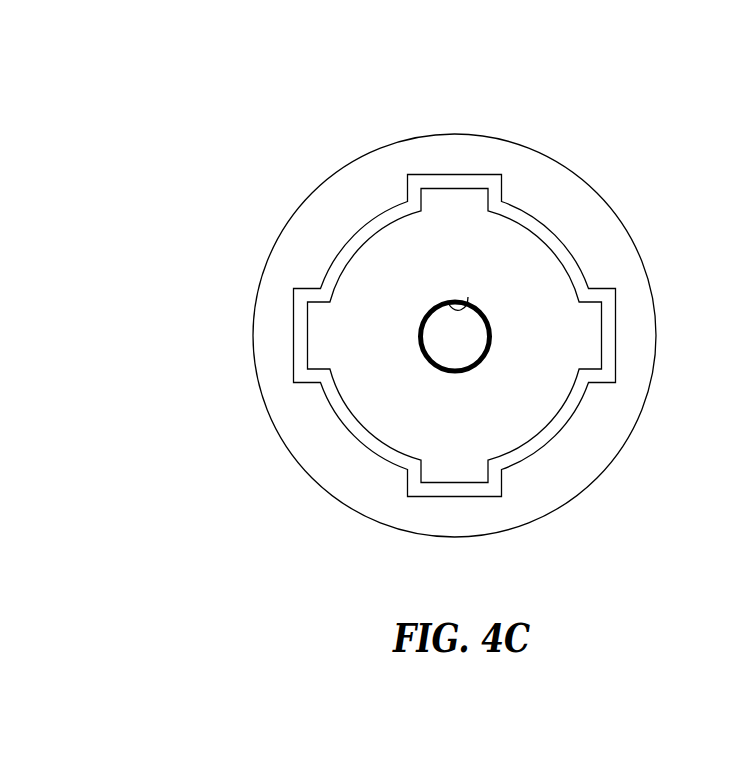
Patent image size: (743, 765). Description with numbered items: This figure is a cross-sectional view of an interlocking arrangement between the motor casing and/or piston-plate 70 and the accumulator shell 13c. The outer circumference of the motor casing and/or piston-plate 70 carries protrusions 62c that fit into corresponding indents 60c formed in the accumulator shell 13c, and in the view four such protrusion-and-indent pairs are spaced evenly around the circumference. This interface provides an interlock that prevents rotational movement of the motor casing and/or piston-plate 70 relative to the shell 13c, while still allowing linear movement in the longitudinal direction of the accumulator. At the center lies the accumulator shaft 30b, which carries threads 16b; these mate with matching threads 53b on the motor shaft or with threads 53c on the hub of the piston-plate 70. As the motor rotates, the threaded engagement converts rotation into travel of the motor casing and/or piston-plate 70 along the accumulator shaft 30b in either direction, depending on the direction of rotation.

The accumulator shell 13c is at (602, 195).
The motor casing and/or piston-plate 70 is at (452, 336).
The indents 60c is at (436, 175).
The protrusions 62c is at (468, 199).
The accumulator shaft 30b is at (445, 312).
The threads 16b is at (468, 297).
The threads 53b is at (482, 312).
The threads 53c is at (479, 323).